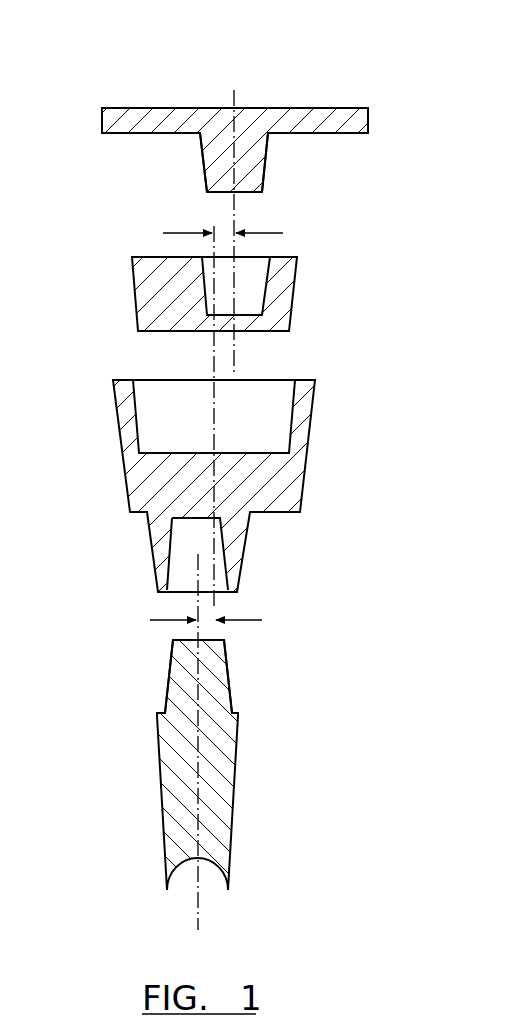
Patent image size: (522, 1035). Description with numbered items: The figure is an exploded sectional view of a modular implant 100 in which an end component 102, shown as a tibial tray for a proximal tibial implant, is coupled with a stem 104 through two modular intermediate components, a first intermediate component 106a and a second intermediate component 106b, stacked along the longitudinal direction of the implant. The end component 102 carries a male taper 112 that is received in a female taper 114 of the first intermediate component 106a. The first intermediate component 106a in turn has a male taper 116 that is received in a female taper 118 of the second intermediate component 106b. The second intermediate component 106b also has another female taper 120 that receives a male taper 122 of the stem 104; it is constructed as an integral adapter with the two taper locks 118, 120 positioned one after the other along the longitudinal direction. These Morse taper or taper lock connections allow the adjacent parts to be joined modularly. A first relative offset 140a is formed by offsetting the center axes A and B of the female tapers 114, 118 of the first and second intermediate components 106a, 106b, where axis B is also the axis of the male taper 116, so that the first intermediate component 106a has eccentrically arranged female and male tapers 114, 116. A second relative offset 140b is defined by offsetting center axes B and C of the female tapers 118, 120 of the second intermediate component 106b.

The modular implant 100 is at (418, 233).
The end component 102 is at (237, 111).
The stem 104 is at (253, 781).
The first intermediate component 106a is at (215, 277).
The second intermediate component 106b is at (260, 475).
The male taper 112 is at (257, 152).
The female taper 114 is at (200, 272).
The male taper 116 is at (133, 308).
The female taper 118 is at (145, 399).
The female taper 120 is at (180, 556).
The male taper 122 is at (220, 688).
The first relative offset 140a is at (251, 233).
The second relative offset 140b is at (233, 622).